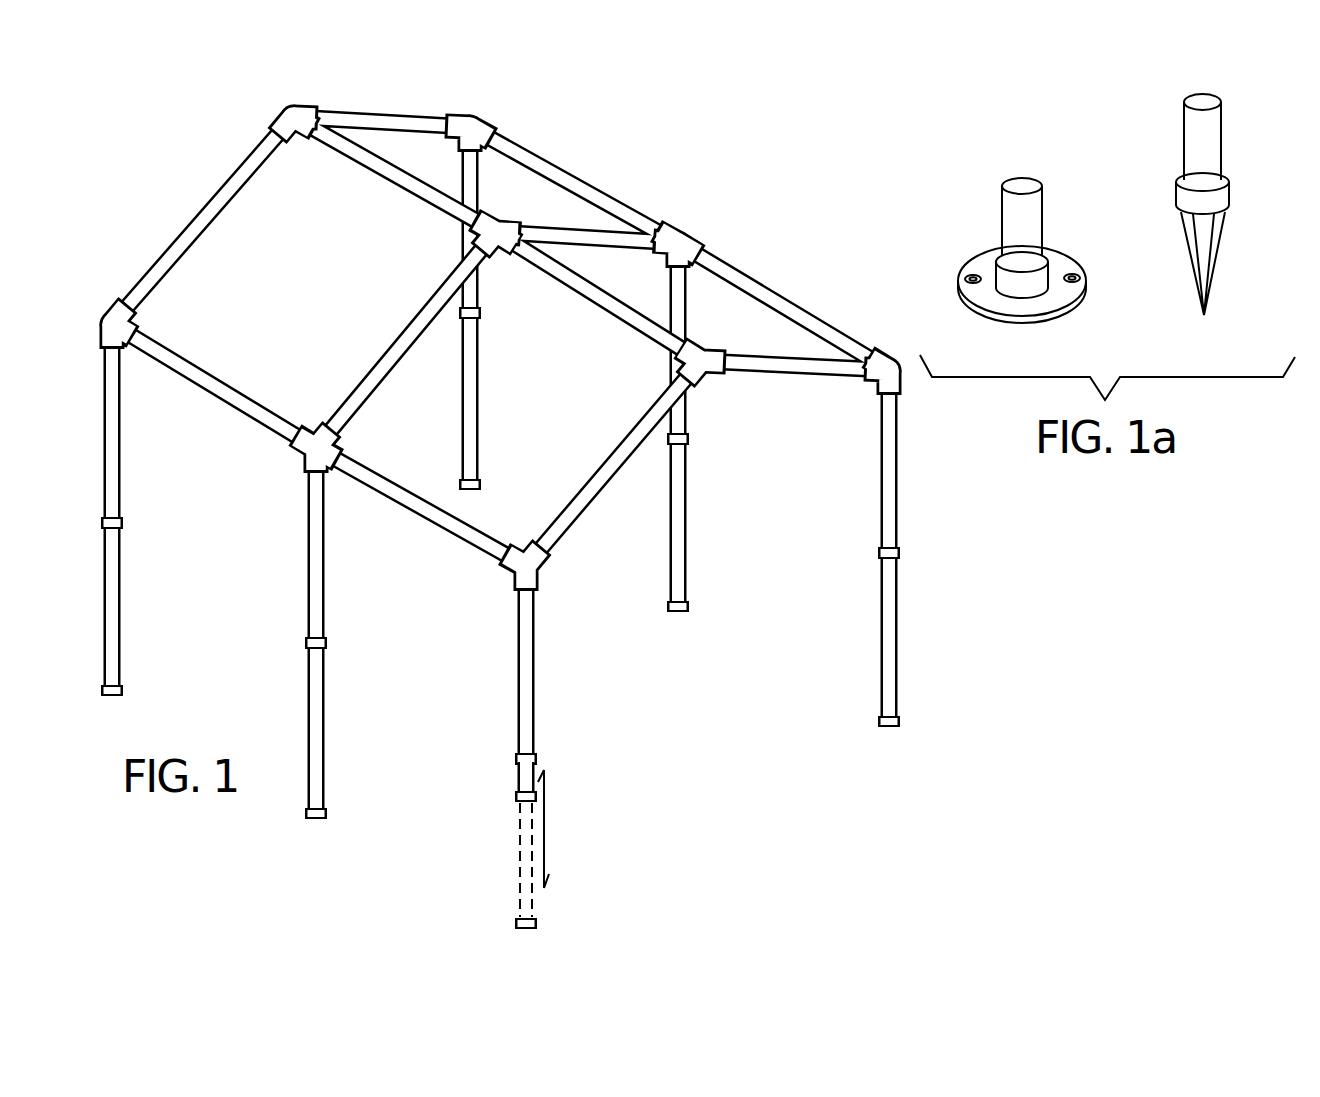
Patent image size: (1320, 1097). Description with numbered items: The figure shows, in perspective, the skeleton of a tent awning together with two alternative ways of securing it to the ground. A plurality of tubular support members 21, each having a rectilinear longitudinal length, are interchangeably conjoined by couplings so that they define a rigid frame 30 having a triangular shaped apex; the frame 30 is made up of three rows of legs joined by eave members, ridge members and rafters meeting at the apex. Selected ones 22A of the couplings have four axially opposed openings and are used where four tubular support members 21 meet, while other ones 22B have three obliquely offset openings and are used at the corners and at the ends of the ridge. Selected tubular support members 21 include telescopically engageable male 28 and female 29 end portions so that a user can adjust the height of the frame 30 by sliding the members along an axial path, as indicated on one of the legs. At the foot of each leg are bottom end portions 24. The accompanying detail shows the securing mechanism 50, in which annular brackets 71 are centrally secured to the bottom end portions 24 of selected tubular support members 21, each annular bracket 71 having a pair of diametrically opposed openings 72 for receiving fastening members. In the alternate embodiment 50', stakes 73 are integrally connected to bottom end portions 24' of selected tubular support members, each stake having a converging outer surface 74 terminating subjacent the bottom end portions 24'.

In FIG. 1, the tubular support members 21 is at (210, 203).
In FIG. 1, the couplings with four axially opposed openings 22A is at (315, 430).
In FIG. 1, the couplings with three obliquely offset openings 22B is at (282, 113).
In FIG. 1, the bottom end portions 24 is at (544, 702).
In FIG. 1a, the bottom end portions 24 is at (986, 216).
In FIG. 1, the male end portion 28 is at (511, 650).
In FIG. 1, the female end portion 29 is at (512, 783).
In FIG. 1, the frame 30 is at (602, 143).
In FIG. 1a, the securing mechanism 50 is at (980, 204).
In FIG. 1a, the alternate embodiment of securing mechanism 50' is at (1134, 188).
In FIG. 1a, the annular brackets 71 is at (1028, 318).
In FIG. 1a, the diametrically opposed openings 72 is at (968, 277).
In FIG. 1a, the stakes 73 is at (1224, 137).
In FIG. 1a, the converging outer surface 74 is at (1218, 263).
In FIG. 1a, the bottom end portions 24' is at (1172, 173).